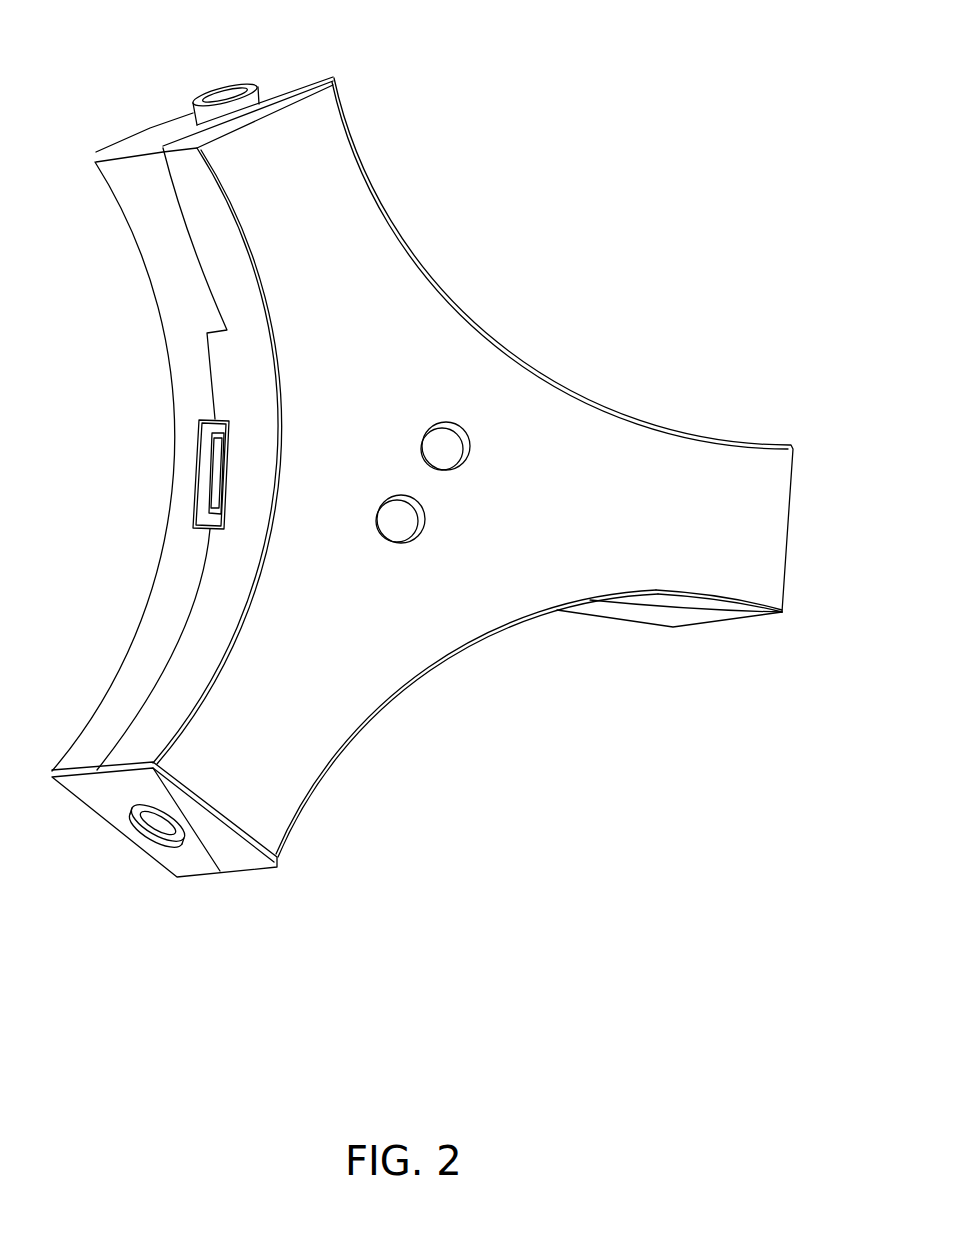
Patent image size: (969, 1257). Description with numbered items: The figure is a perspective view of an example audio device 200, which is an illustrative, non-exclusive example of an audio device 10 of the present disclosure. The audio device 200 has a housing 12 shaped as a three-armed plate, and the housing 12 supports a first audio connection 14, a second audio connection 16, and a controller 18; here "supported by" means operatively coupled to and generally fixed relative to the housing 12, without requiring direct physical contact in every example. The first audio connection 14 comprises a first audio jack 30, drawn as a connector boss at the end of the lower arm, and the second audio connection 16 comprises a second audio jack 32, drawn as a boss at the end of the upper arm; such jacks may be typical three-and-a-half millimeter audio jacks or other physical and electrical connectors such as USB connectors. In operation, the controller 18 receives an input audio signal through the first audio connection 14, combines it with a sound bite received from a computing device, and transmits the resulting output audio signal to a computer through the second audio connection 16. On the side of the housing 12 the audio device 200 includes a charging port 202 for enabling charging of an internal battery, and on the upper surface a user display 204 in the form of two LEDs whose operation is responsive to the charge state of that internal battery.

The audio device 10 is at (586, 46).
The housing 12 is at (388, 208).
The first audio connection 14 is at (147, 843).
The second audio connection 16 is at (222, 84).
The controller 18 is at (542, 433).
The first audio jack 30 is at (130, 822).
The second audio jack 32 is at (203, 97).
The example audio device 200 is at (503, 76).
The charging port 202 is at (200, 486).
The user display 204 is at (387, 456).